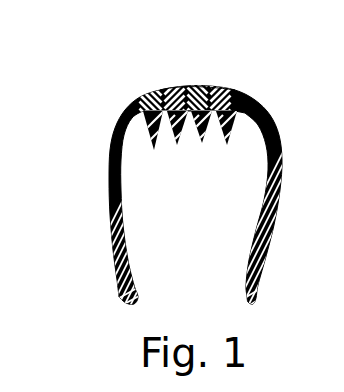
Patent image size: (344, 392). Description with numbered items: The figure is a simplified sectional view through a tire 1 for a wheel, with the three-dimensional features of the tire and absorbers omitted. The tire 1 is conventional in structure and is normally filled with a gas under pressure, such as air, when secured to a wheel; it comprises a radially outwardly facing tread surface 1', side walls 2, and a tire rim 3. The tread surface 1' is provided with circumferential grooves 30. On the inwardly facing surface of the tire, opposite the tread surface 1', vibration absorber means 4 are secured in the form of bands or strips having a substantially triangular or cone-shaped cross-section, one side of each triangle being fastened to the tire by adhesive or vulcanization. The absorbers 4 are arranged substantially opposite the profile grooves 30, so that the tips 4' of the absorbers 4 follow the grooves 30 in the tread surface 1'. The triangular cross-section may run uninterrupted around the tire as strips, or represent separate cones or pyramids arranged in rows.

The tire 1 is at (203, 176).
The tread surface 1' is at (197, 51).
The side walls 2 is at (115, 202).
The tire rim 3 is at (120, 295).
The circumferential grooves 30 is at (146, 91).
The vibration absorber means 4 is at (193, 172).
The tips 4' is at (191, 134).